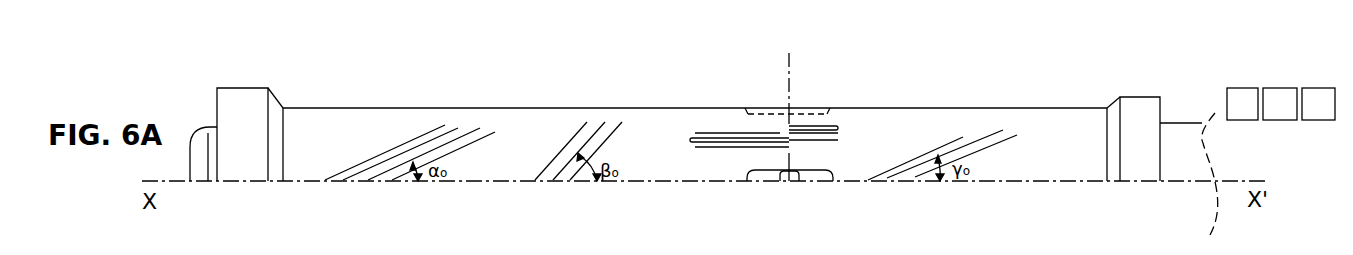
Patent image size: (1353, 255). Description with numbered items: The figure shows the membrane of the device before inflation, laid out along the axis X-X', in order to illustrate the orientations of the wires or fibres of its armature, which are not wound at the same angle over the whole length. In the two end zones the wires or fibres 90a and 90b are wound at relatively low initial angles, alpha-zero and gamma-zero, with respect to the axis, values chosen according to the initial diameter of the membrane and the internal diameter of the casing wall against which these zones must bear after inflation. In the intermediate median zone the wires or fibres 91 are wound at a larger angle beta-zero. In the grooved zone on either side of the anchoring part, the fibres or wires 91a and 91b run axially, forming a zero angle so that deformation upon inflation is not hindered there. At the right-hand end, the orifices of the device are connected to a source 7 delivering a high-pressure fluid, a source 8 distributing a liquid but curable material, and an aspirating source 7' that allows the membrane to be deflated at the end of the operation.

The wires or fibres of the end zone 90a is at (394, 154).
The wires or fibres of the intermediate median zone 91 is at (584, 141).
The wires or fibres of the grooved zone 91a is at (733, 138).
The wires or fibres of the grooved zone 91b is at (802, 132).
The wires or fibres of the end zone 90b is at (942, 155).
The source for distributing fluid 7 is at (1233, 119).
The source for distributing curable material 8 is at (1210, 157).
The source for aspirating fluid 7' is at (1273, 125).